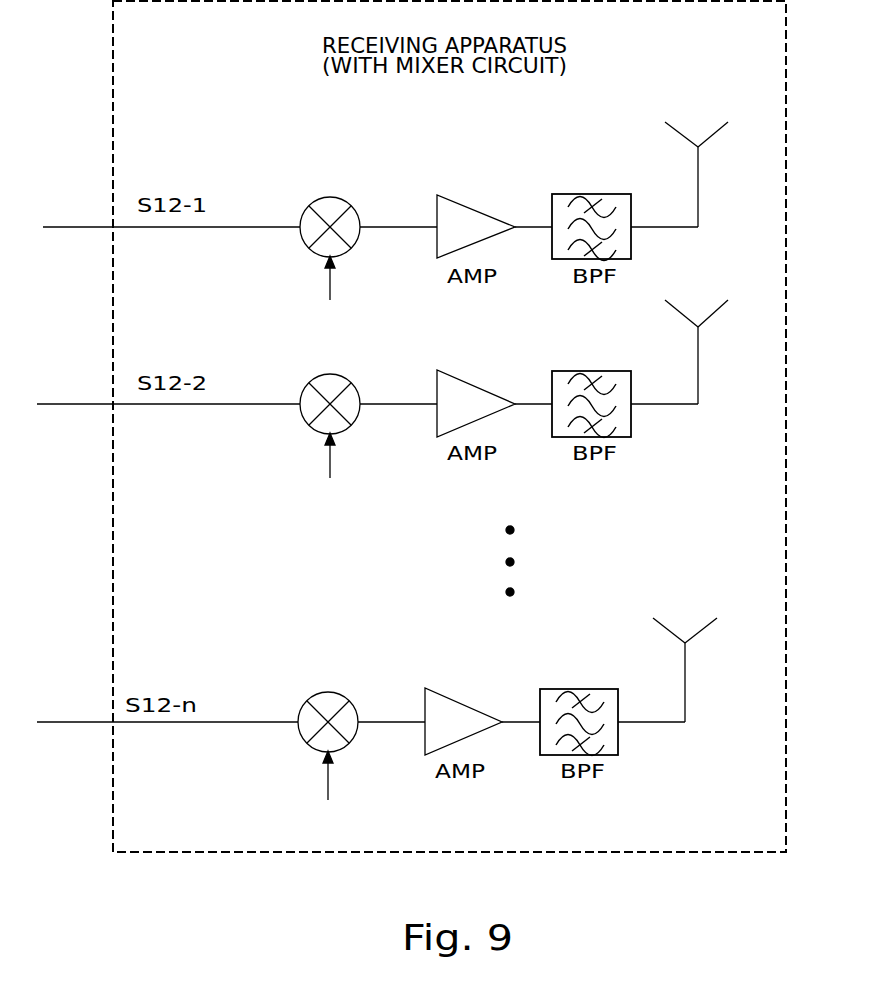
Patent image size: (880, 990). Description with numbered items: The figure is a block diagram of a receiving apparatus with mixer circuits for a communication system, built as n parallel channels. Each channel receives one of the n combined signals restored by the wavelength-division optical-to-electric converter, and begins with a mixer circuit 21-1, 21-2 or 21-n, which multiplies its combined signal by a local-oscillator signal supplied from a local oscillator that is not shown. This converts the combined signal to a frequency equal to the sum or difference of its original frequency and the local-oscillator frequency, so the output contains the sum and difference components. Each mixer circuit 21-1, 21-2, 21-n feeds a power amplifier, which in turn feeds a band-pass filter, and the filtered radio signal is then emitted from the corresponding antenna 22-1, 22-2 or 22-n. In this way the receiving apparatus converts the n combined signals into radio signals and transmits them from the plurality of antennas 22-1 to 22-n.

The mixer circuit 21-1 is at (328, 196).
The mixer circuit 21-2 is at (302, 391).
The mixer circuit 21-n is at (325, 692).
The antenna 22-1 is at (700, 183).
The antenna 22-2 is at (700, 361).
The antenna 22-n is at (687, 677).